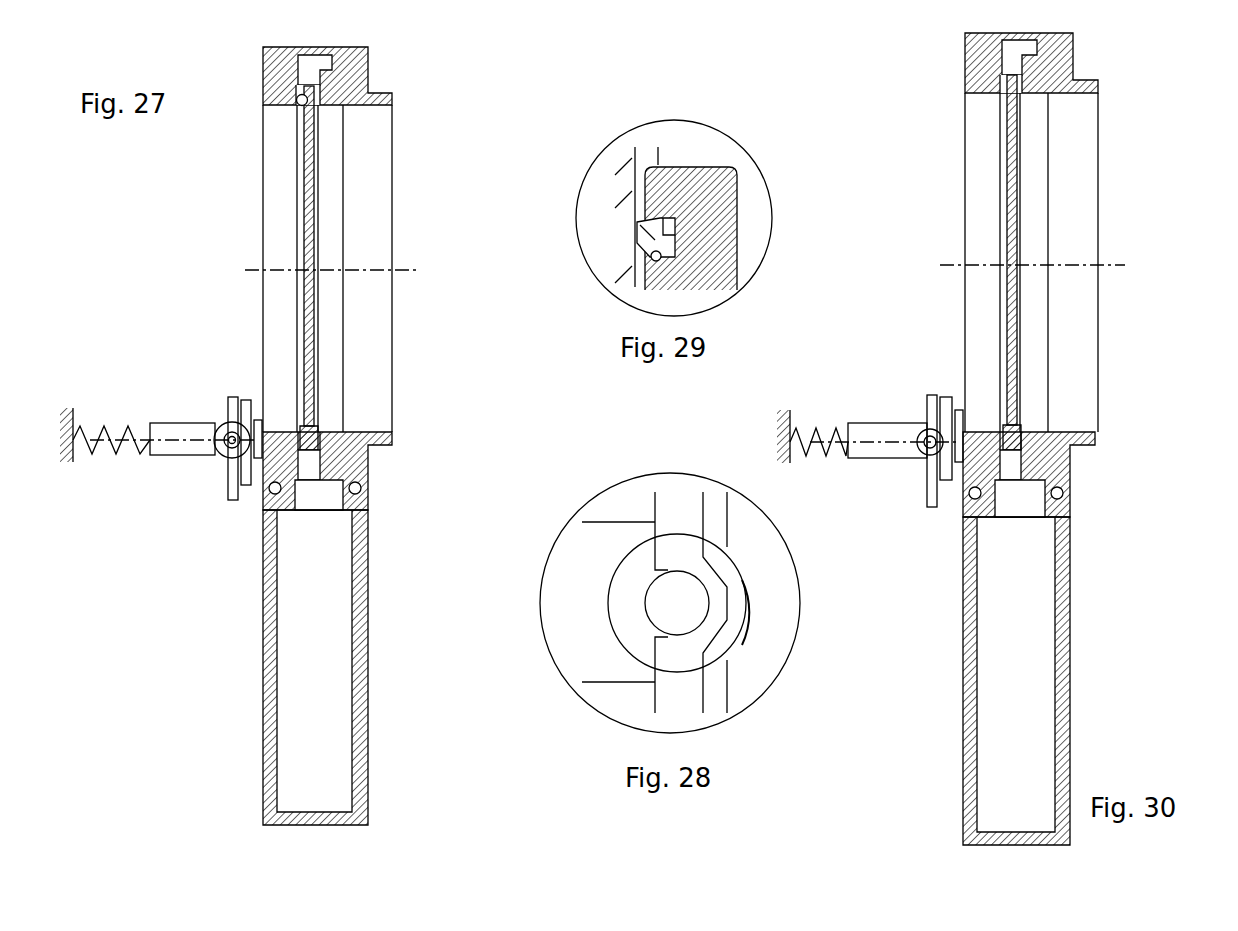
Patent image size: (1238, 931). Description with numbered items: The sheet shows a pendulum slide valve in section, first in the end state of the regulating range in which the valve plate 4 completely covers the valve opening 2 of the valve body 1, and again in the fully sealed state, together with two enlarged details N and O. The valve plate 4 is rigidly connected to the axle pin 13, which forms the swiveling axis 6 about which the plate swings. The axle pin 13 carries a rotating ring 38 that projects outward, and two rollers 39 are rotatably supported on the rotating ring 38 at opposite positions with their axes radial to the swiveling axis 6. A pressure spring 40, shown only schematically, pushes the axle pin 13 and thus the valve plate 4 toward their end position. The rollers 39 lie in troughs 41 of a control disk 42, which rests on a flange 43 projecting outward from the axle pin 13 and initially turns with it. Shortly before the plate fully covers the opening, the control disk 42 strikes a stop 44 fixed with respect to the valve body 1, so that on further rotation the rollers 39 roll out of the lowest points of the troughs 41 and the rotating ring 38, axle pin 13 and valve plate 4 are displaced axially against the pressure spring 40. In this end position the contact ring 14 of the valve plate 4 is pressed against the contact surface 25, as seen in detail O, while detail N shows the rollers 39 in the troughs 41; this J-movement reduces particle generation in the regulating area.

In FIG. 27, the valve body 1 is at (352, 82).
In FIG. 30, the valve body 1 is at (1060, 470).
In FIG. 27, the valve opening 2 is at (375, 328).
In FIG. 30, the valve opening 2 is at (968, 300).
In FIG. 27, the valve plate 4 is at (303, 305).
In FIG. 29, the valve plate 4 is at (730, 247).
In FIG. 30, the valve plate 4 is at (1015, 315).
In FIG. 27, the detail O is at (298, 105).
In FIG. 27, the swiveling axis 6 is at (190, 438).
In FIG. 30, the swiveling axis 6 is at (898, 440).
In FIG. 27, the axle pin 13 is at (172, 455).
In FIG. 30, the axle pin 13 is at (885, 450).
In FIG. 29, the contact ring 14 is at (655, 235).
In FIG. 29, the contact surface 25 is at (645, 160).
In FIG. 30, the rotating ring 38 is at (930, 505).
In FIG. 28, the rollers 39 is at (625, 613).
In FIG. 30, the rollers 39 is at (925, 457).
In FIG. 27, the pressure spring 40 is at (95, 428).
In FIG. 30, the pressure spring 40 is at (812, 430).
In FIG. 28, the troughs 41 is at (748, 640).
In FIG. 27, the control disk 42 is at (255, 490).
In FIG. 30, the control disk 42 is at (957, 430).
In FIG. 27, the flange 43 is at (257, 430).
In FIG. 27, the stop 44 is at (262, 520).
In FIG. 27, the detail N is at (218, 470).